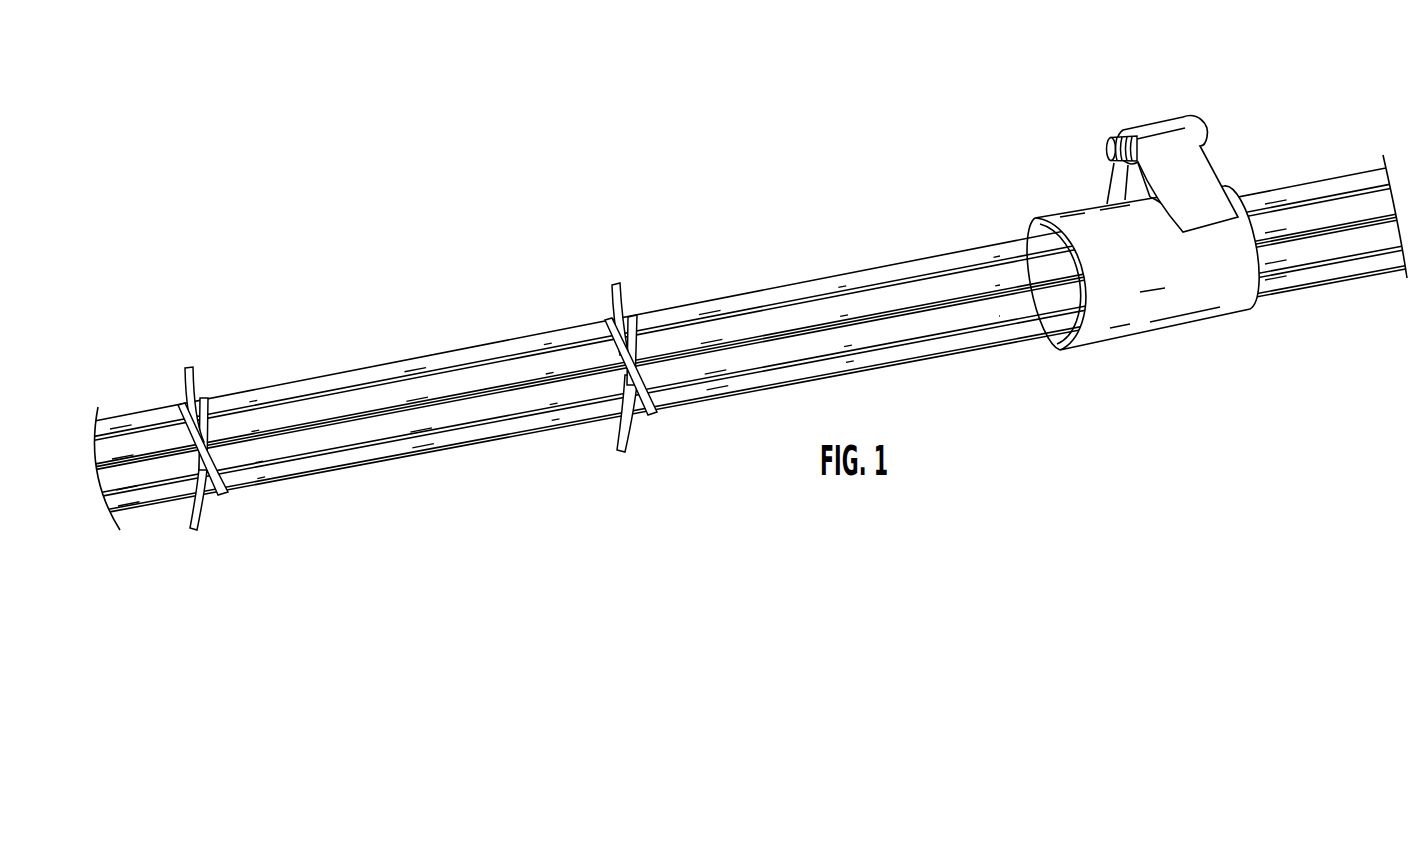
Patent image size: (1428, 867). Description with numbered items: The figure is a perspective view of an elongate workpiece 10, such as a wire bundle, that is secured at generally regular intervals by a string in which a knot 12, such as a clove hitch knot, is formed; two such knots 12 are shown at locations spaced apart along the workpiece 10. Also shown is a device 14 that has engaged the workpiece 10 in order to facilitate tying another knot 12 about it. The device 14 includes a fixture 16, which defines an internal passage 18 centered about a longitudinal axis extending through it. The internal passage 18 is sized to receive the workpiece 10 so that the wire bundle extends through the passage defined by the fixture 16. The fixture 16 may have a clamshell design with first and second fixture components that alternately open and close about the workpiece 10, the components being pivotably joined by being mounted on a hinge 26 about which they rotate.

The elongate workpiece 10 is at (758, 288).
The knot 12 is at (197, 380).
The device 14 is at (1180, 212).
The fixture 16 is at (1233, 243).
The internal passage 18 is at (1090, 297).
The hinge 26 is at (1140, 129).